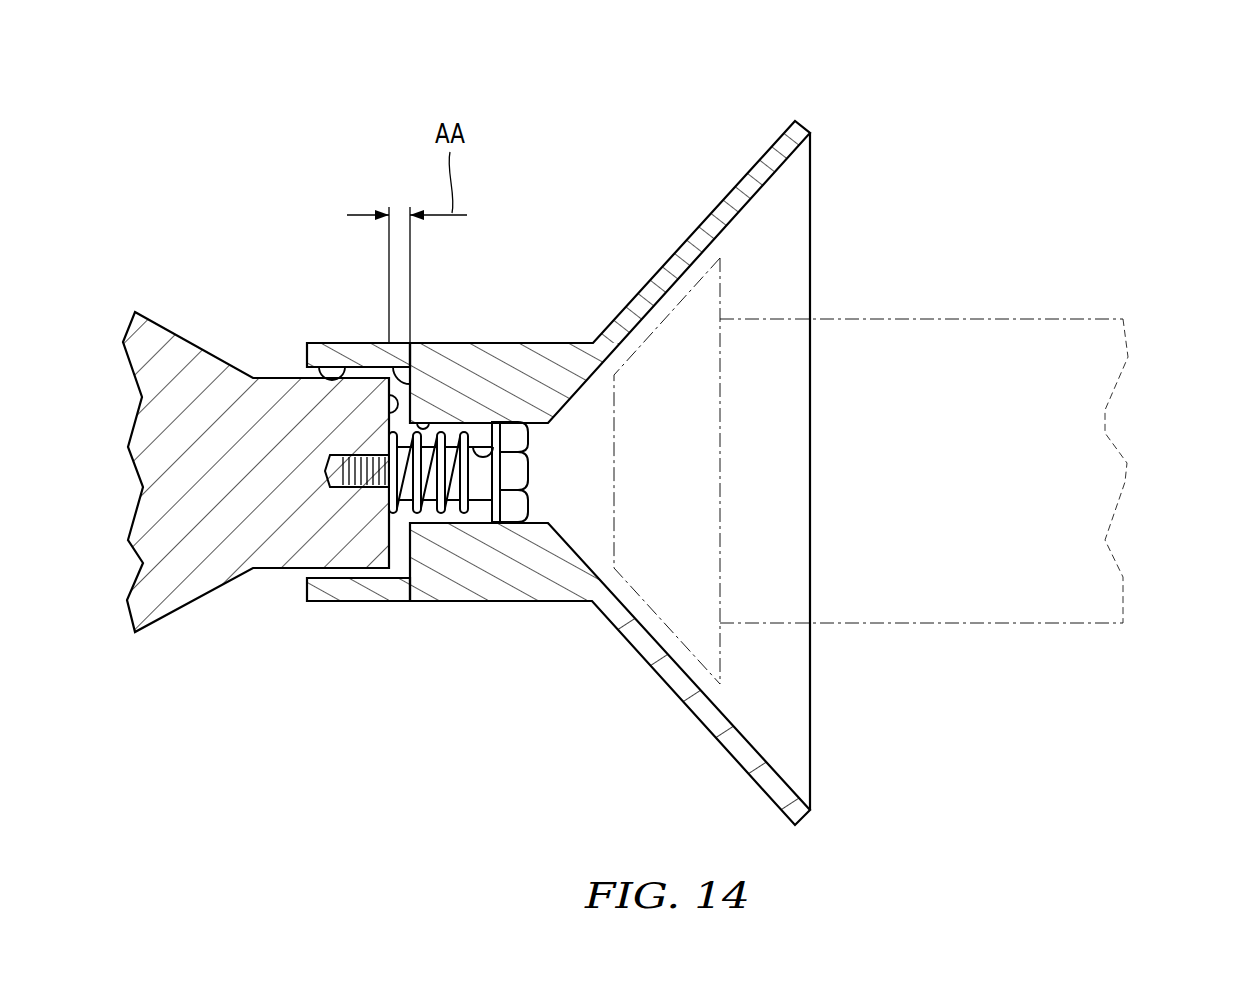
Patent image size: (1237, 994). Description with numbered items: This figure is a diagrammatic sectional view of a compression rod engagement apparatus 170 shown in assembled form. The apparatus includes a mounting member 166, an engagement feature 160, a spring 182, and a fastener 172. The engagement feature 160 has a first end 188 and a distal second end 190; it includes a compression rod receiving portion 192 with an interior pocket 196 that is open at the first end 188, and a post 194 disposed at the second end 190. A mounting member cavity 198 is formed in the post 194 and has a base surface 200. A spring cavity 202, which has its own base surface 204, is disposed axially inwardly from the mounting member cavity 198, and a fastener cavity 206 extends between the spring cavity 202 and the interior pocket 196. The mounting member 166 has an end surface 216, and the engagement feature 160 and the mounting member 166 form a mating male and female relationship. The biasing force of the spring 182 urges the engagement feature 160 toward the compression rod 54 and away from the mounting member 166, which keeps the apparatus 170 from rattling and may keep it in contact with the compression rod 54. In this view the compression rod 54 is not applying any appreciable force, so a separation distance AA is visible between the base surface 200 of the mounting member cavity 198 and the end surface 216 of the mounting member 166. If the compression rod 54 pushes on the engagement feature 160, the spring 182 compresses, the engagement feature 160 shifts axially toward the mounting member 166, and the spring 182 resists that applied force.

The compression rod 54 is at (1106, 381).
The engagement feature 160 is at (843, 183).
The mounting member 166 is at (190, 611).
The compression rod engagement apparatus 170 is at (696, 429).
The fastener 172 is at (514, 523).
The spring 182 is at (418, 508).
The first end 188 is at (826, 660).
The second end 190 is at (290, 597).
The compression rod receiving portion 192 is at (728, 355).
The post 194 is at (550, 614).
The interior pocket 196 is at (786, 673).
The mounting member cavity 198 is at (322, 343).
The base surface 200 is at (400, 366).
The spring cavity 202 is at (447, 430).
The base surface 204 is at (438, 524).
The fastener cavity 206 is at (500, 422).
The end surface 216 is at (388, 419).